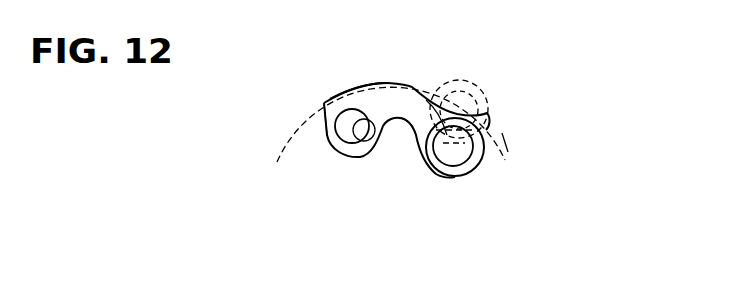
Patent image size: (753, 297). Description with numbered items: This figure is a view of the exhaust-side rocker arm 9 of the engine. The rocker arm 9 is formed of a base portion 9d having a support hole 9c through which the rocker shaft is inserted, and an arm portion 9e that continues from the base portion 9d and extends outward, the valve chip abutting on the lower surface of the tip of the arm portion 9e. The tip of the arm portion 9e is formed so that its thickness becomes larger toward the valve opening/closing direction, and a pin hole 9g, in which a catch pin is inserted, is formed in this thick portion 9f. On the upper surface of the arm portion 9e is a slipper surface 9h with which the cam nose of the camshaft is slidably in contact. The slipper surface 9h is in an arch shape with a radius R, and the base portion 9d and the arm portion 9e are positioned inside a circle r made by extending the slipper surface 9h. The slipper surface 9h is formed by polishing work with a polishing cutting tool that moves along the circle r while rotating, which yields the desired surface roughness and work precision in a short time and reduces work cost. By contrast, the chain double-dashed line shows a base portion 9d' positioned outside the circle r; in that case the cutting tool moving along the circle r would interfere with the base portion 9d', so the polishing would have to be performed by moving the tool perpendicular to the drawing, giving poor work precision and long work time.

The exhaust-side rocker arm 9 is at (444, 188).
The support hole 9c is at (463, 172).
The base portion 9d is at (502, 165).
The base portion (positioned outside the circle) 9d' is at (516, 95).
The arm portion 9e is at (400, 100).
The thick portion 9f is at (322, 124).
The pin hole 9g is at (360, 142).
The slipper surface 9h is at (357, 87).
The radius R is at (395, 208).
The circle r is at (505, 143).